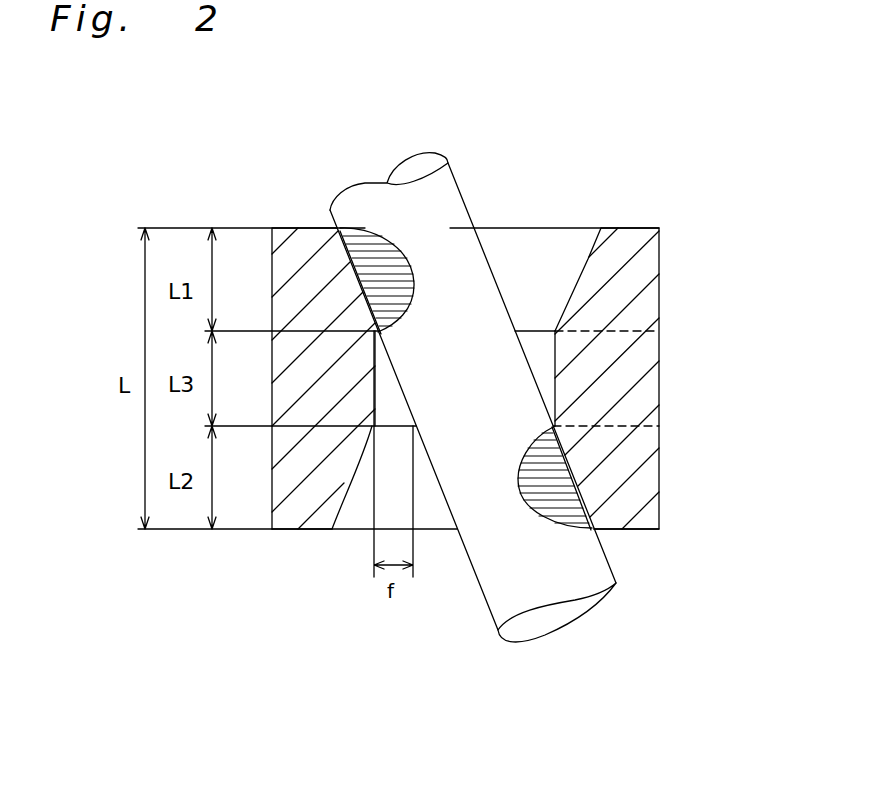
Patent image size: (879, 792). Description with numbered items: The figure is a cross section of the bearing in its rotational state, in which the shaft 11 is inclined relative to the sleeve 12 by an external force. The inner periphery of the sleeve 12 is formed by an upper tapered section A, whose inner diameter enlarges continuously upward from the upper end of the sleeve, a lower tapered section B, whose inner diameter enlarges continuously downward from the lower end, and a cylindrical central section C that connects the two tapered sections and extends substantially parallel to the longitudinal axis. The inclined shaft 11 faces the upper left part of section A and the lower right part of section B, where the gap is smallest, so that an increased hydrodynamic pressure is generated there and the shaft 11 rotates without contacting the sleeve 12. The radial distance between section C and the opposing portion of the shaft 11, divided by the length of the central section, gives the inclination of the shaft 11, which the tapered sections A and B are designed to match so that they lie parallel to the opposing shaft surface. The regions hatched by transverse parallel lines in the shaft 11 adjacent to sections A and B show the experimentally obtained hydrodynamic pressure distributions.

The shaft 11 is at (477, 230).
The sleeve 12 is at (638, 322).
The tapered section A is at (281, 278).
The tapered section B is at (304, 485).
The central section C is at (317, 362).